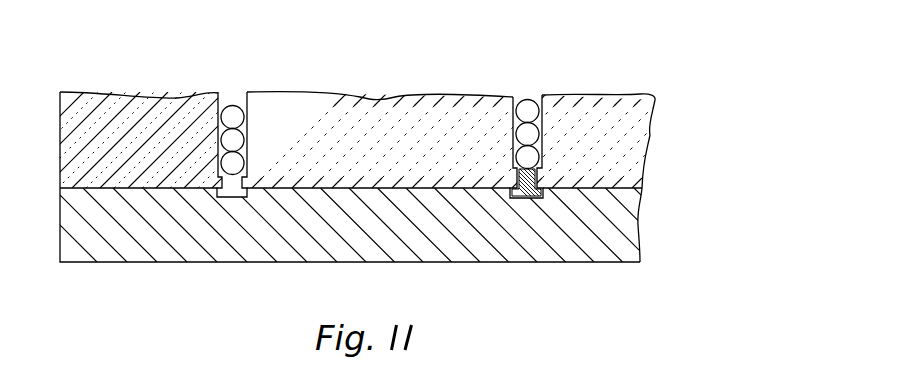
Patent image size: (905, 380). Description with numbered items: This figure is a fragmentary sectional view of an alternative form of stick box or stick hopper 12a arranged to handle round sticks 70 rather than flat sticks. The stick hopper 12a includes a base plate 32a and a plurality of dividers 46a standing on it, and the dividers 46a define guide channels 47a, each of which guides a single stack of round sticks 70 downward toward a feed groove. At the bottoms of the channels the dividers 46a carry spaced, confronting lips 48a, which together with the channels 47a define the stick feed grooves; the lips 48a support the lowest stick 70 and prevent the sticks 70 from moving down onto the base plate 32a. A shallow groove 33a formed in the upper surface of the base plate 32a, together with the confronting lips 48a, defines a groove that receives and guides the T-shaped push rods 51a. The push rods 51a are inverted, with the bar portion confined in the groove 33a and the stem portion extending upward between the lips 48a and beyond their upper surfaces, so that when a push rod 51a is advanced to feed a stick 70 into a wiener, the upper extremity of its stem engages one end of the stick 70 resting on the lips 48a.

The stick hopper 12a is at (633, 92).
The dividers 46a is at (378, 110).
The base plate 32a is at (627, 220).
The shallow groove 33a is at (222, 194).
The guide channels 47a is at (222, 98).
The push rods 51a is at (523, 197).
The confronting lips 48a is at (545, 196).
The round sticks 70 is at (523, 107).